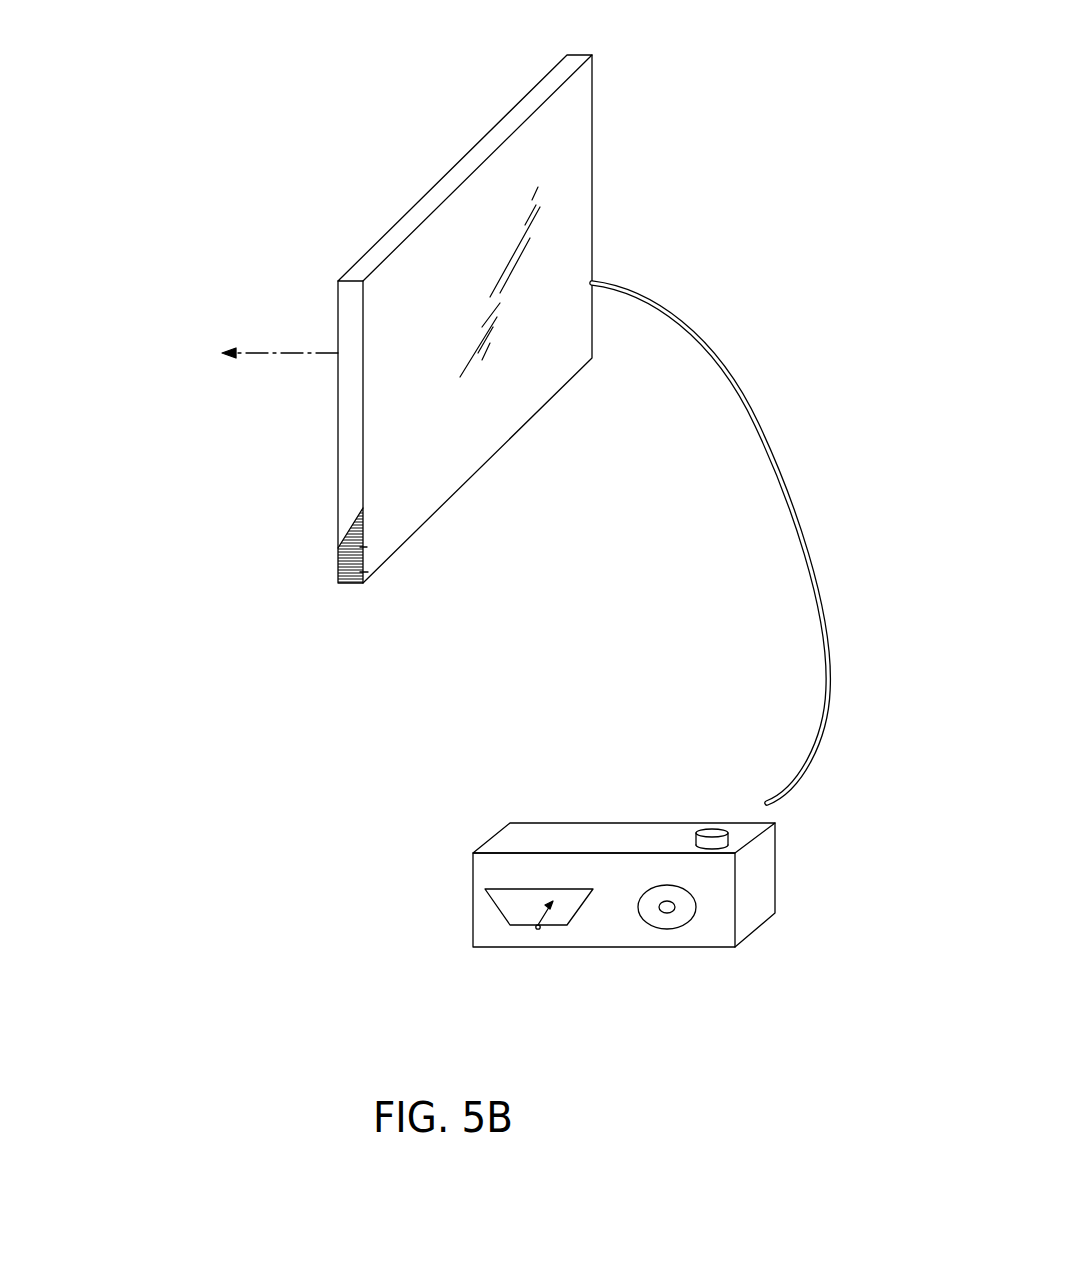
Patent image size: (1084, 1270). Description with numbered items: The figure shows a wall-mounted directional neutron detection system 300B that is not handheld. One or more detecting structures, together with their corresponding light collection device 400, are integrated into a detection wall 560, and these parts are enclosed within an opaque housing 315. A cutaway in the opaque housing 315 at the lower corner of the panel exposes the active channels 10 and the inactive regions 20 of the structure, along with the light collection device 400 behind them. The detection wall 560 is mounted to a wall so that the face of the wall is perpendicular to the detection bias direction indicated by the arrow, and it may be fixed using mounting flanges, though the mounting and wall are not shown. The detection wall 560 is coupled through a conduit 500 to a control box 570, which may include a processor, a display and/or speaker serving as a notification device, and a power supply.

The detection system 300B is at (786, 67).
The detection wall 560 is at (478, 147).
The opaque housing 315 is at (580, 221).
The active channels 10 is at (334, 552).
The inactive regions 20 is at (331, 571).
The light collection device 400 is at (364, 573).
The conduit 500 is at (753, 378).
The control box 570 is at (622, 927).